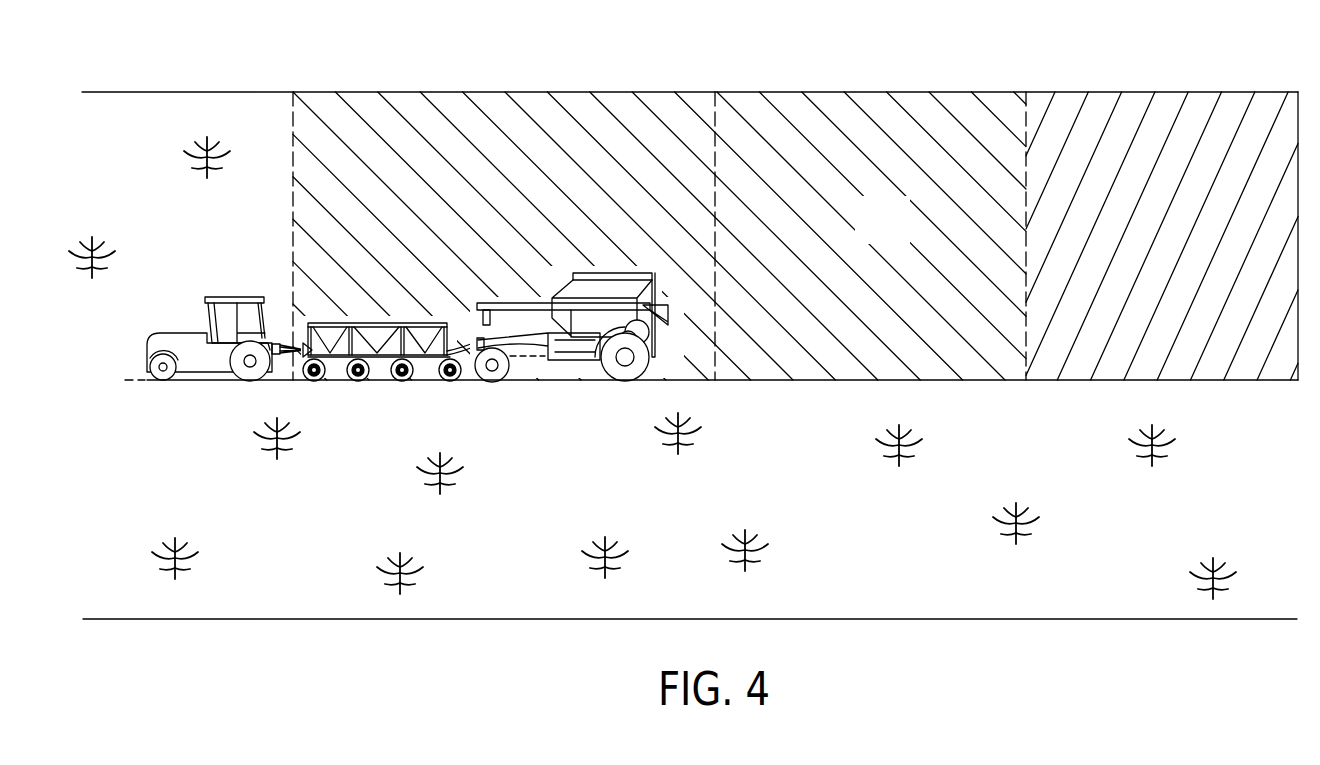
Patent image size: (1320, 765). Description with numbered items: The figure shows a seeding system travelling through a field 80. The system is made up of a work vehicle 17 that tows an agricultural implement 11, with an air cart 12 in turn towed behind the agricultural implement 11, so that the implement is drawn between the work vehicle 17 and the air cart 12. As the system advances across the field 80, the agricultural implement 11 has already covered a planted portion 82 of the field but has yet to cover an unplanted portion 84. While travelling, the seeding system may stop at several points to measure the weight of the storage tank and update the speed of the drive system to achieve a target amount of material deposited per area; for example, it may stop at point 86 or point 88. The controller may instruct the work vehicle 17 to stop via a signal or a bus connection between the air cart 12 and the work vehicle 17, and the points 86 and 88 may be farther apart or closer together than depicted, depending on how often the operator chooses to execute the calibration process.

The agricultural implement 11 is at (404, 318).
The air cart 12 is at (547, 286).
The work vehicle 17 is at (205, 275).
The field 80 is at (905, 58).
The planted portion 82 is at (898, 233).
The unplanted portion 84 is at (741, 504).
The point 86 is at (1028, 118).
The point 88 is at (713, 97).